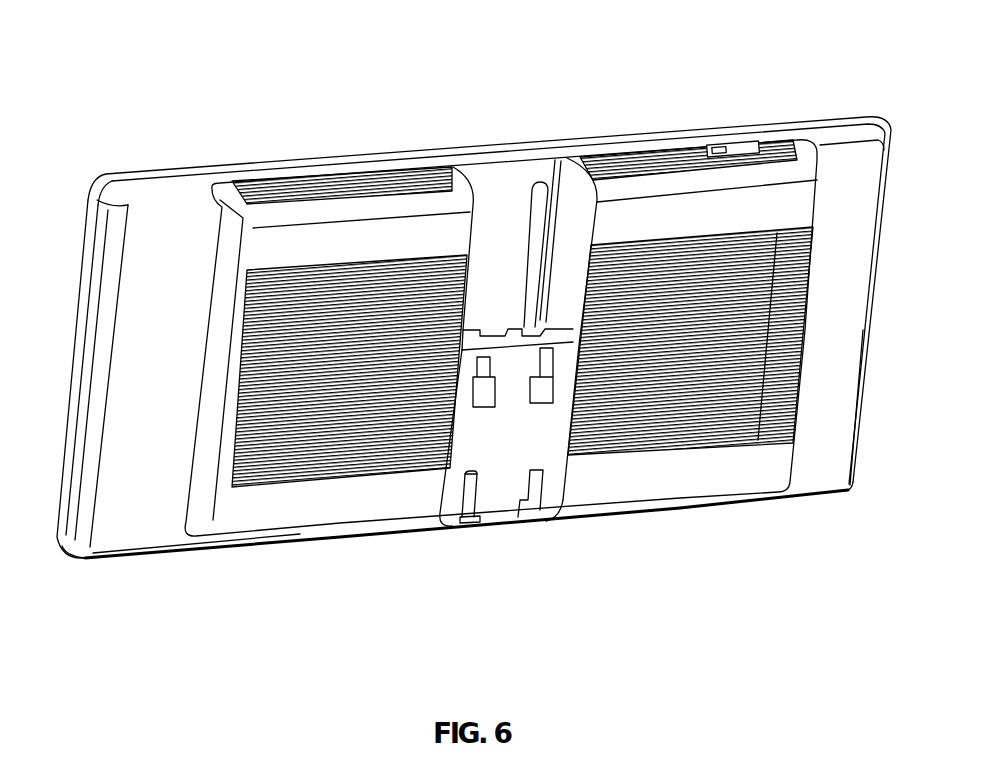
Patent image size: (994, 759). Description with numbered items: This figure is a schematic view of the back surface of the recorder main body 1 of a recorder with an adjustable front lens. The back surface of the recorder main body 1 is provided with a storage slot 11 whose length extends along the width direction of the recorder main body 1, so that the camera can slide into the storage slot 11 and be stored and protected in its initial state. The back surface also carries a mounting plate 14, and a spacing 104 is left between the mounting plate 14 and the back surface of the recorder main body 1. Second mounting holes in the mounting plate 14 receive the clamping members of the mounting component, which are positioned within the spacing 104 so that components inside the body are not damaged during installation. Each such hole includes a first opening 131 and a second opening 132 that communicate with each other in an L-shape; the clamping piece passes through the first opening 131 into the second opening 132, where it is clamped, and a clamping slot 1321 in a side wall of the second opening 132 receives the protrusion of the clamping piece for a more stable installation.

The recorder main body 1 is at (792, 110).
The storage slot 11 is at (506, 228).
The spacing 104 is at (489, 334).
The mounting plate 14 is at (552, 450).
The first opening 131 is at (473, 522).
The second opening 132 is at (459, 500).
The clamping slot 1321 is at (478, 497).